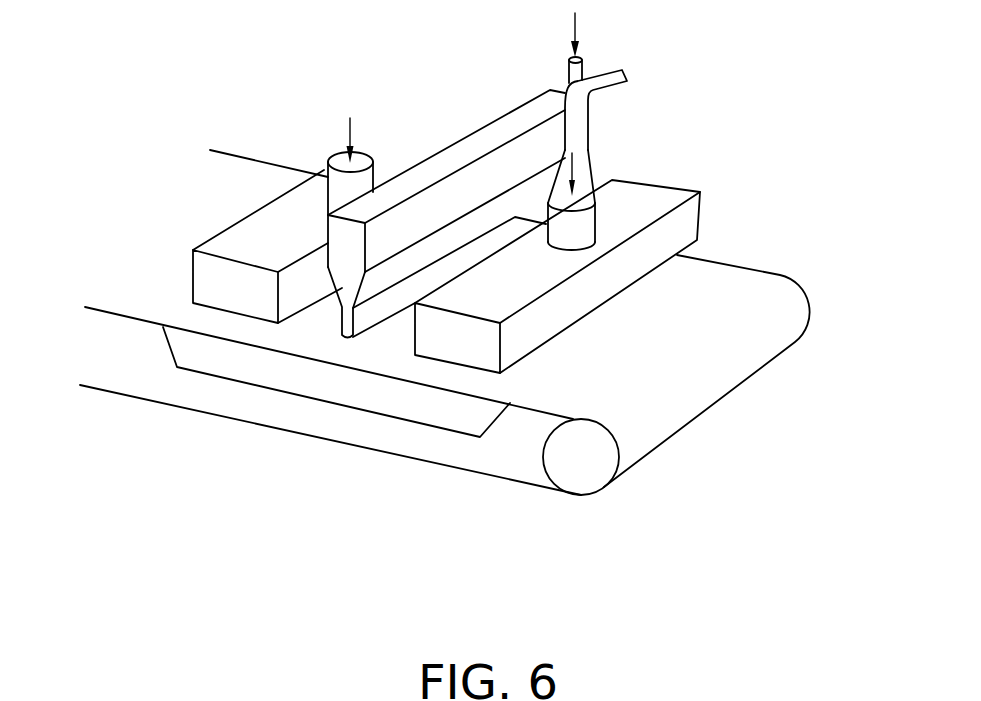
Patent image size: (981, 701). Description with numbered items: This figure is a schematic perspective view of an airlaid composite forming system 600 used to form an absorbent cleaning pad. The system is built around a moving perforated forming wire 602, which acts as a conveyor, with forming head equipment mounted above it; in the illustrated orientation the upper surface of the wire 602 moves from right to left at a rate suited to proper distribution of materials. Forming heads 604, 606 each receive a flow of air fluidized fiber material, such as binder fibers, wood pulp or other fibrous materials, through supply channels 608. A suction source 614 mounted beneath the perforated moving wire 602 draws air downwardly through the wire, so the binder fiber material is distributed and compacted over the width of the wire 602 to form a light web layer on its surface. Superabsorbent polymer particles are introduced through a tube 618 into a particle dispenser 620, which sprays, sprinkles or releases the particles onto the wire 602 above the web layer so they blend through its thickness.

The airlaid composite forming system 600 is at (777, 110).
The perforated forming wire 602 is at (130, 300).
The forming head 604 is at (643, 208).
The forming head 606 is at (263, 233).
The supply channel 608 is at (345, 158).
The suction source 614 is at (370, 403).
The tube 618 is at (568, 78).
The particle dispenser 620 is at (523, 120).